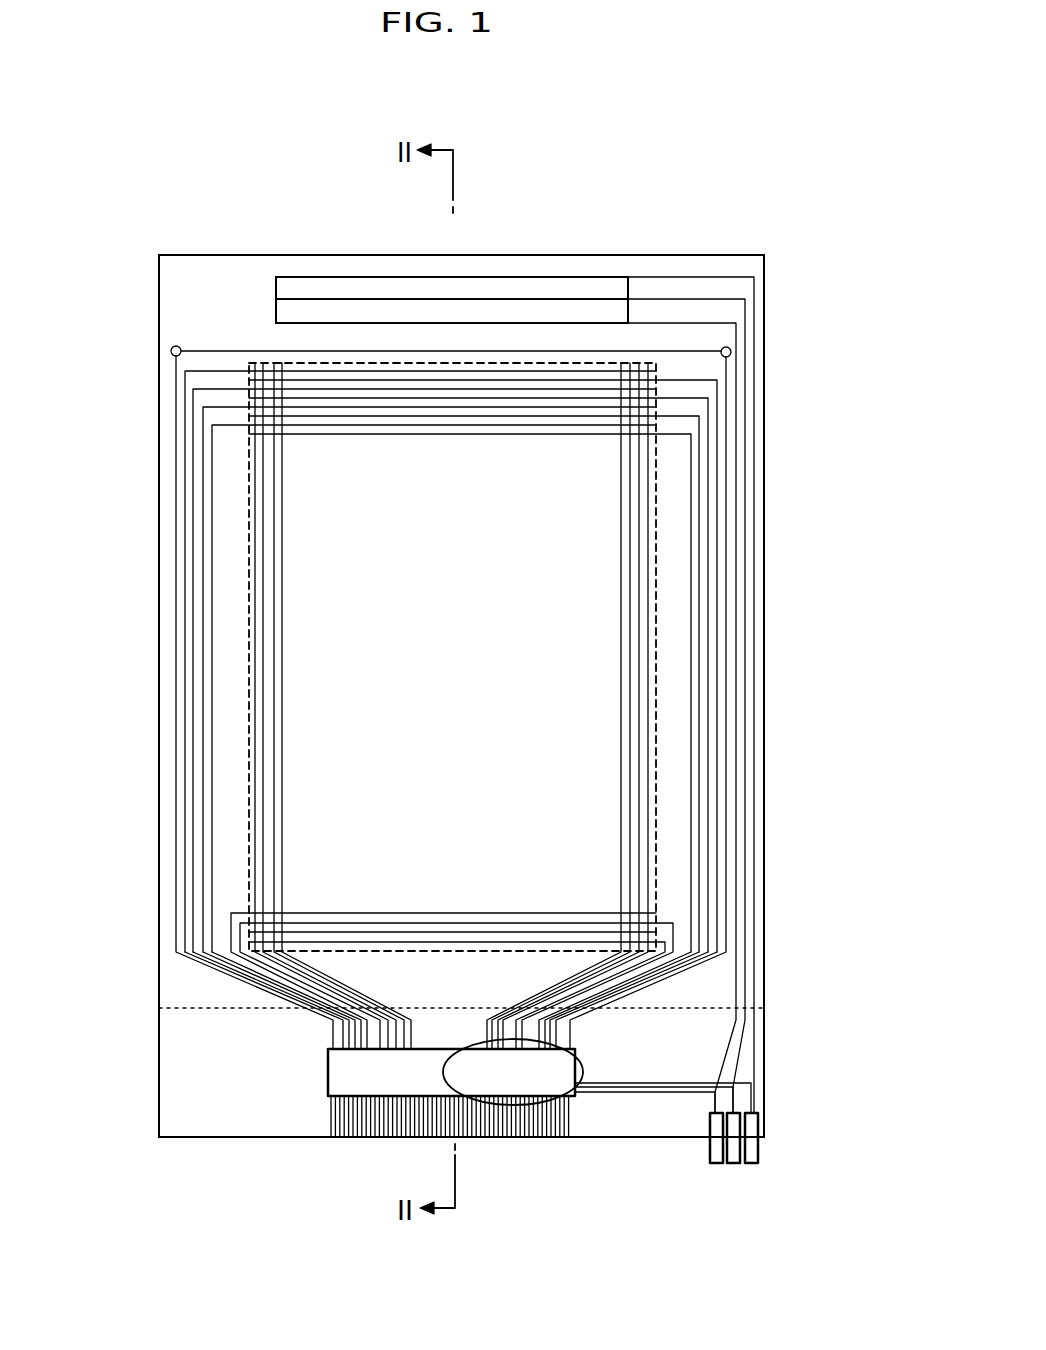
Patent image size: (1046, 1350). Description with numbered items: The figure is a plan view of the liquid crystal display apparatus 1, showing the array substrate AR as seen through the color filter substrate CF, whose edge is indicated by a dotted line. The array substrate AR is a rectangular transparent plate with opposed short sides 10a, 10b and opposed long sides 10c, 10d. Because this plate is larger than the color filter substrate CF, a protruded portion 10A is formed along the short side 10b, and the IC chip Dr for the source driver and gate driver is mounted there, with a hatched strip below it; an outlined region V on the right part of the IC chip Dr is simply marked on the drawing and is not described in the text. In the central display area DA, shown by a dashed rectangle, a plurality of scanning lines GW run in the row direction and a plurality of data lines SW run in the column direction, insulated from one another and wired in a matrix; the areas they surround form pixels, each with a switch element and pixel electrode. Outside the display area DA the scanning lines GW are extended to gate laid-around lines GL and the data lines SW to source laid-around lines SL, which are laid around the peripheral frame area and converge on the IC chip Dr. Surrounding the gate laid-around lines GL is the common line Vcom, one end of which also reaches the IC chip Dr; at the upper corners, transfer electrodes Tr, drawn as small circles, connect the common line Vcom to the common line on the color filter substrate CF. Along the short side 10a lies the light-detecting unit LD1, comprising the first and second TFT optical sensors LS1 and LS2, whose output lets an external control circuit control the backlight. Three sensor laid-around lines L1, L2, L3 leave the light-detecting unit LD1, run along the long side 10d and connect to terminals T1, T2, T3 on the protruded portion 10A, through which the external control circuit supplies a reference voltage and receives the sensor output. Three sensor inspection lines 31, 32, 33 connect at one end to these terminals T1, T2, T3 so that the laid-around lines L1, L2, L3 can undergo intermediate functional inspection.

The liquid crystal display apparatus 1 is at (341, 65).
The protruded portion 10A is at (185, 1080).
The short side 10a is at (612, 255).
The short side 10b is at (200, 1137).
The long side 10c is at (159, 533).
The long side 10d is at (766, 956).
The array substrate AR is at (178, 1123).
The color filter substrate CF is at (174, 981).
The display area DA is at (316, 740).
The light-detecting unit LD1 is at (348, 283).
The first TFT optical sensor LS1 is at (391, 288).
The second TFT optical sensor LS2 is at (529, 312).
The sensor laid-around line L1 is at (745, 275).
The sensor laid-around line L2 is at (650, 315).
The sensor laid-around line L3 is at (712, 305).
The transfer electrode Tr is at (171, 351).
The common line Vcom is at (175, 383).
The gate laid-around line GL is at (184, 465).
The scanning line GW is at (262, 362).
The data line SW is at (253, 640).
The source laid-around line SL is at (360, 988).
The IC chip Dr is at (353, 1080).
The region V is at (535, 1105).
The sensor inspection line 31 is at (668, 1083).
The sensor inspection line 32 is at (622, 1088).
The sensor inspection line 33 is at (578, 1093).
The terminal T1 is at (755, 1163).
The terminal T2 is at (720, 1163).
The terminal T3 is at (734, 1163).